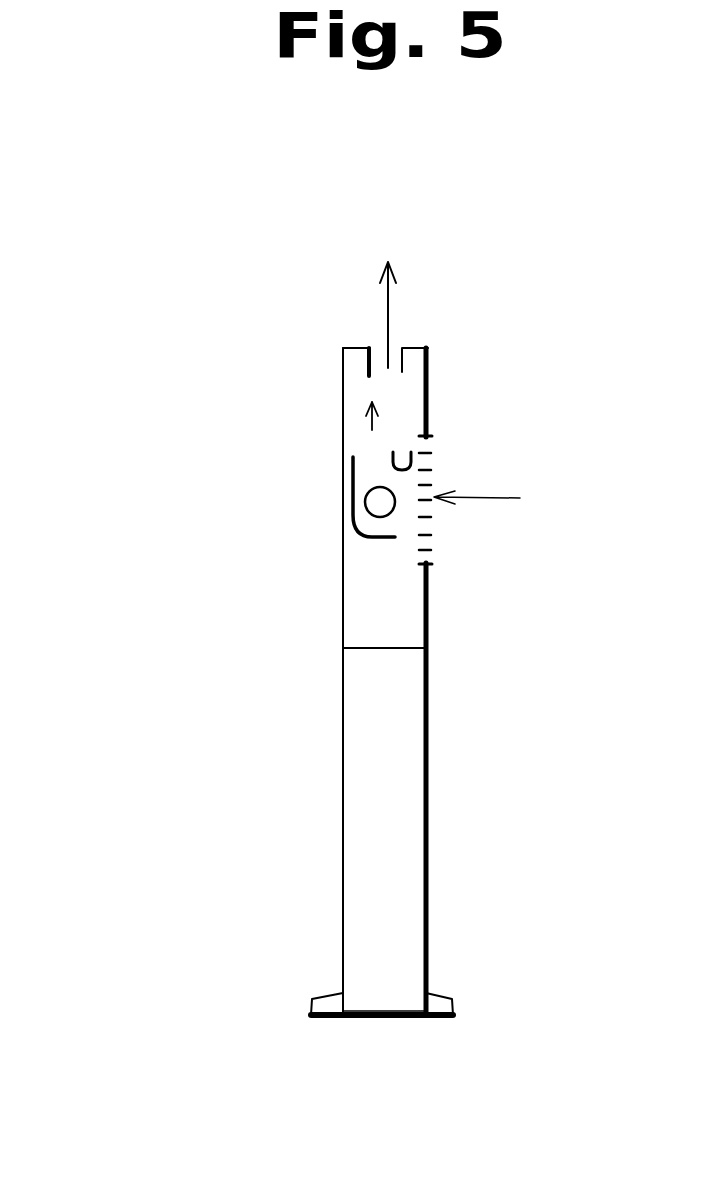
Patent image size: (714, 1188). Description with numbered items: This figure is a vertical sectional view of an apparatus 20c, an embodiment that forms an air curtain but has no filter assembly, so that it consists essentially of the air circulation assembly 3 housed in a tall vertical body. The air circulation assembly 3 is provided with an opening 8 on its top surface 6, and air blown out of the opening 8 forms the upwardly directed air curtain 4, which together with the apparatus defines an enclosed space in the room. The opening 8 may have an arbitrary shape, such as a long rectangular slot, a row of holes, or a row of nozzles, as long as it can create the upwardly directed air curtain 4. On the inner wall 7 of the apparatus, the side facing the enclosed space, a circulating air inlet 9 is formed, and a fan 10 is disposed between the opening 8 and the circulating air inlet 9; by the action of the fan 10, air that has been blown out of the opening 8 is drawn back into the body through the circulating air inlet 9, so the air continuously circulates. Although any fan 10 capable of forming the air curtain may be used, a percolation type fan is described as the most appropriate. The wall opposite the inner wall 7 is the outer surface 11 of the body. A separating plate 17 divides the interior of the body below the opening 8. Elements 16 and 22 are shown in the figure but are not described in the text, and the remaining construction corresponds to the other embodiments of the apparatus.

The air circulation assembly 3 is at (430, 408).
The air curtain 4 is at (386, 297).
The top surface 6 is at (353, 348).
The inner wall 7 is at (427, 638).
The opening 8 is at (399, 369).
The circulating air inlet 9 is at (426, 463).
The fan 10 is at (393, 507).
The outer surface 11 is at (342, 518).
The base 16 is at (433, 1005).
The separating plate 17 is at (379, 648).
The apparatus 20c is at (205, 422).
The thick side wall 22 is at (425, 852).